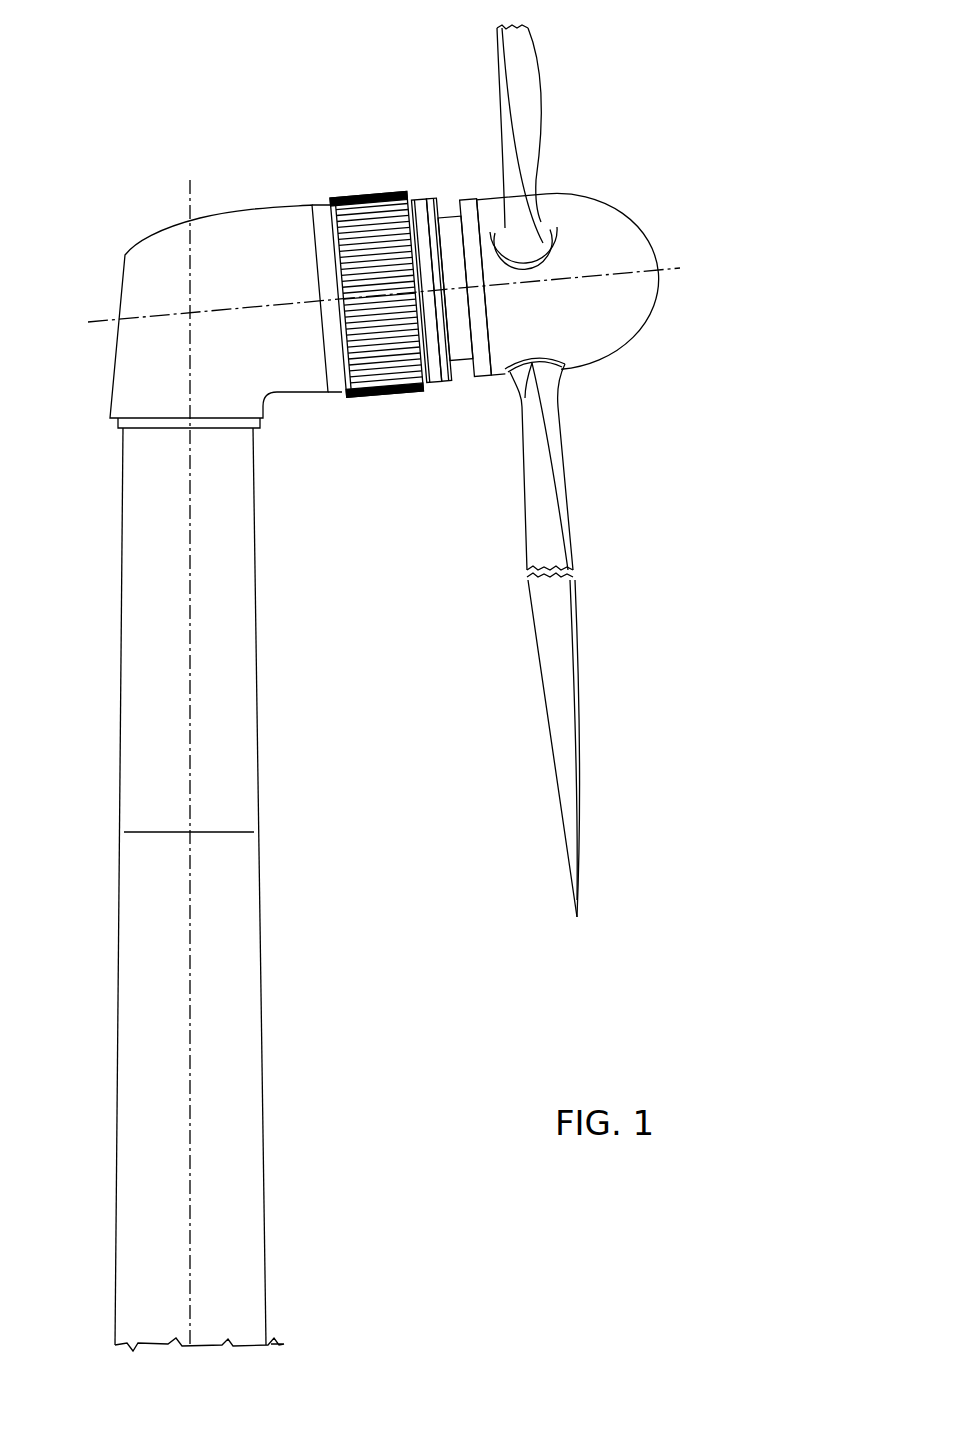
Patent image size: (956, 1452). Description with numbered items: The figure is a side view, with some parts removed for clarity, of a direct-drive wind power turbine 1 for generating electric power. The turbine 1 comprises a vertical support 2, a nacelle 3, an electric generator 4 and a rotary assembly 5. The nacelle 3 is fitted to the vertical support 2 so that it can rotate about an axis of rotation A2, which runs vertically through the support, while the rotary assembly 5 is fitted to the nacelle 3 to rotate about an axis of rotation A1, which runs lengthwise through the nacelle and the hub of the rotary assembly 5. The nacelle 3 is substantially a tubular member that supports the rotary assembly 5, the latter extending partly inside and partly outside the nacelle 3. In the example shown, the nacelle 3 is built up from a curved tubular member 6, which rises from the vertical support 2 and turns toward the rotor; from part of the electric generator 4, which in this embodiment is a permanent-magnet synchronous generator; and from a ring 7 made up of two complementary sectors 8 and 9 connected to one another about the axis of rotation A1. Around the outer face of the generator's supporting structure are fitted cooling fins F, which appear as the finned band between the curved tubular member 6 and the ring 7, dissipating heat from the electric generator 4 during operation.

The direct-drive wind power turbine 1 is at (393, 680).
The vertical support 2 is at (237, 643).
The nacelle 3 is at (352, 289).
The electric generator 4 is at (389, 446).
The cooling fins F is at (363, 140).
The rotary assembly 5 is at (577, 467).
The curved tubular member 6 is at (163, 248).
The ring 7 is at (466, 242).
The complementary sector 8 is at (445, 378).
The complementary sector 9 is at (425, 203).
The axis of rotation A1 is at (632, 270).
The axis of rotation A2 is at (188, 278).